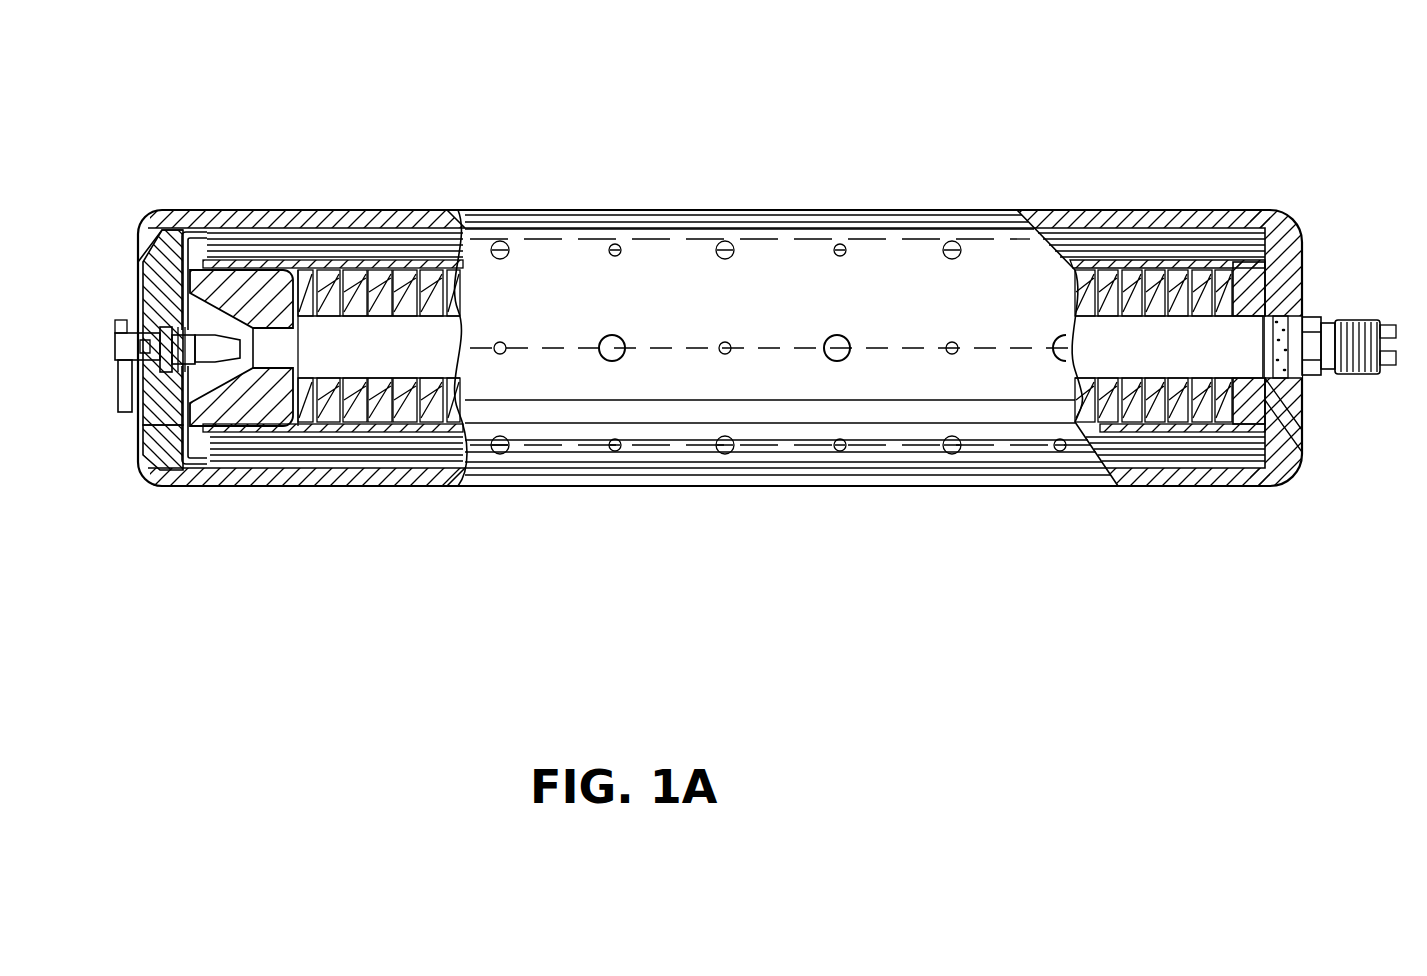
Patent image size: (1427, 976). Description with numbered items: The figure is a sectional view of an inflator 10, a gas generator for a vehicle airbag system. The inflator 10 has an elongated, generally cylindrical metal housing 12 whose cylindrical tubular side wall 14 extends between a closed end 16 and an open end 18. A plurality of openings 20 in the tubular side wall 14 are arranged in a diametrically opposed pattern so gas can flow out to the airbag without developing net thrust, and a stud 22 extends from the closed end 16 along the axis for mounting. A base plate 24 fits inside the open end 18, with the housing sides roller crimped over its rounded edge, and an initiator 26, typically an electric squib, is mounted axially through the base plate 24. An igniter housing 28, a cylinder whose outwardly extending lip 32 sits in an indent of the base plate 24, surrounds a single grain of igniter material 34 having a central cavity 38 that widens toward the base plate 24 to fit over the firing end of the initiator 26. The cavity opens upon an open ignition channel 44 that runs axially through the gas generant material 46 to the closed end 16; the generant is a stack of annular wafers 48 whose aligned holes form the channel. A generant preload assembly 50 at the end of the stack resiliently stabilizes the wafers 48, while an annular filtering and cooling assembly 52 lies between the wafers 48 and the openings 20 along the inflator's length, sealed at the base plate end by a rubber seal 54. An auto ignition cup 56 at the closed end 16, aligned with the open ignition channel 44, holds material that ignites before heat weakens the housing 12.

The inflator 10 is at (768, 311).
The housing 12 is at (427, 212).
The cylindrical tubular side wall 14 is at (873, 463).
The closed end 16 is at (1302, 238).
The open end 18 is at (142, 303).
The openings 20 is at (953, 243).
The stud 22 is at (1353, 320).
The base plate 24 is at (143, 272).
The initiator 26 is at (183, 360).
The igniter housing 28 is at (257, 273).
The outwardly extending lip 32 is at (166, 468).
The single grain of igniter material 34 is at (208, 428).
The central cavity 38 is at (277, 348).
The open ignition channel 44 is at (1097, 352).
The gas generant material 46 is at (1210, 420).
The wafers 48 is at (1153, 283).
The generant preload assembly 50 is at (1280, 417).
The filtering and cooling assembly 52 is at (1243, 247).
The rubber seal 54 is at (197, 245).
The auto ignition cup 56 is at (1305, 378).